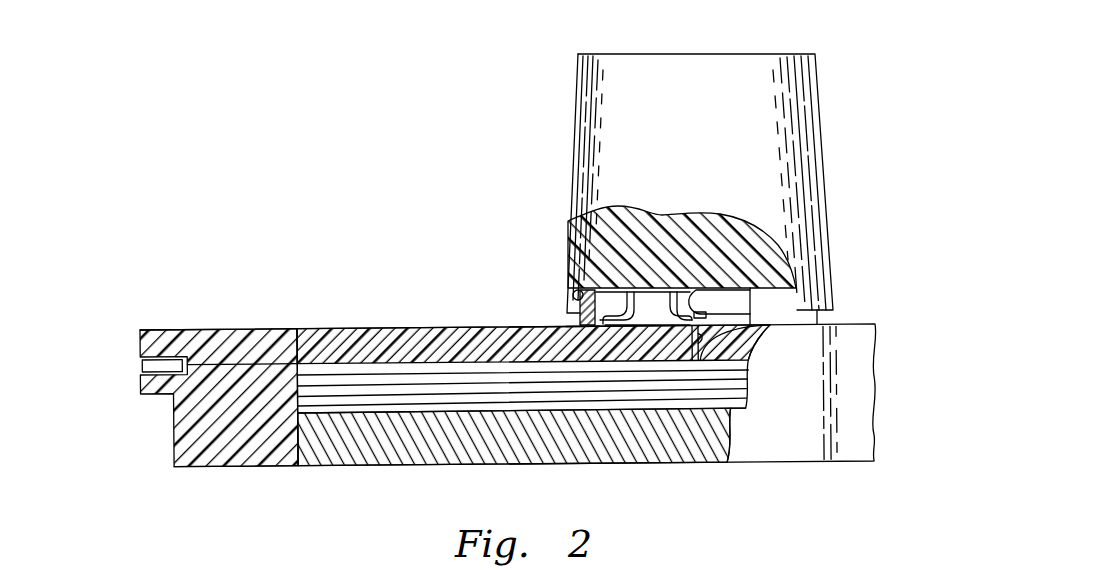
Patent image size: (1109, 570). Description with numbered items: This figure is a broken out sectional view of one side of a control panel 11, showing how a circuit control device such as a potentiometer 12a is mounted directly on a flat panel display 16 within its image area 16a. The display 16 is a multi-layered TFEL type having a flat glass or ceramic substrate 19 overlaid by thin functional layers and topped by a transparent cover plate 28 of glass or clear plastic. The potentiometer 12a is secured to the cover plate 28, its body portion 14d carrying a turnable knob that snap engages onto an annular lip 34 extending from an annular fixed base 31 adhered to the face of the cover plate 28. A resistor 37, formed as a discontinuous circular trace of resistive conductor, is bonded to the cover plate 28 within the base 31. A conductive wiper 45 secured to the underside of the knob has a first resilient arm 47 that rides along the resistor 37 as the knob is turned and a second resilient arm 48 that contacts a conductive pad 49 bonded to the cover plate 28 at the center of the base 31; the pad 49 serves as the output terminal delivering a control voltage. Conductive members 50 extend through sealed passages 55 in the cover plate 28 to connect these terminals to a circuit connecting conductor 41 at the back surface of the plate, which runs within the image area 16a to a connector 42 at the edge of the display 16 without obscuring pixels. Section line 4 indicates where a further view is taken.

The disk drive assembly 11 is at (345, 176).
The potentiometer 12a is at (555, 146).
The carrier body portion 14d is at (722, 124).
The annular lip 34 is at (768, 237).
The conductive wiper 45 is at (655, 291).
The second resilient arm 48 is at (689, 291).
The first resilient arm 47 is at (569, 252).
The annular fixed base 31 is at (566, 322).
The section line 4- 4 is at (548, 290).
The flat panel display 16 is at (205, 329).
The connector 42 is at (152, 316).
The transparent cover plate 28 is at (318, 329).
The circuit connecting conductor 41 is at (400, 329).
The image area 16a is at (427, 329).
The sealed passage 55 is at (690, 338).
The conductive member 50 is at (745, 356).
The conductive pad 49 is at (753, 350).
The substrate 19 is at (697, 454).
The resistor 37 is at (612, 332).